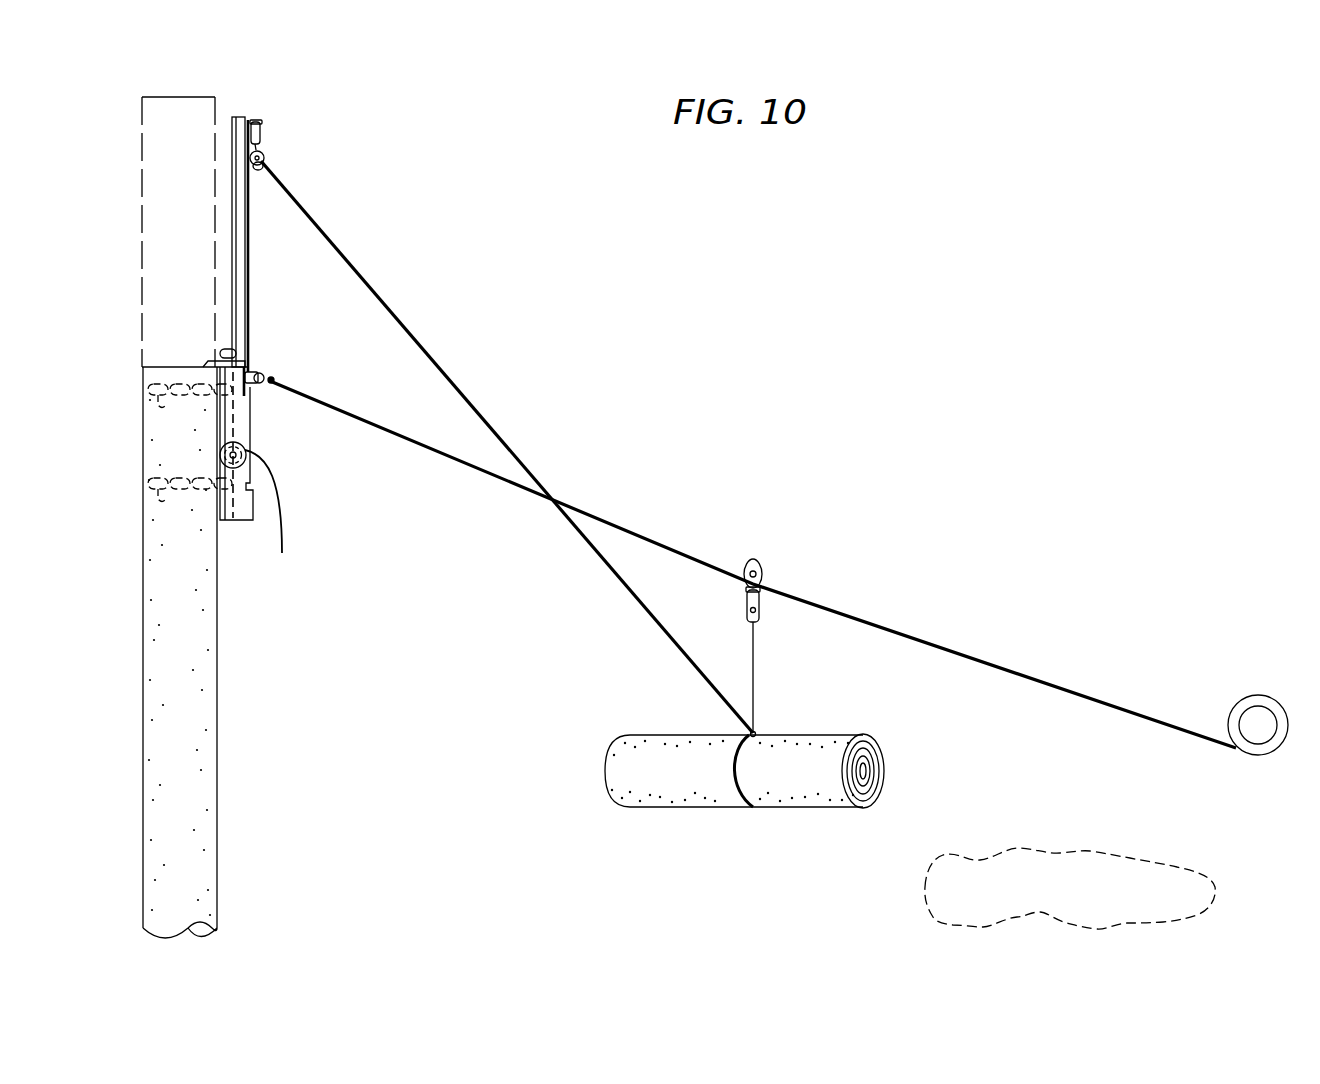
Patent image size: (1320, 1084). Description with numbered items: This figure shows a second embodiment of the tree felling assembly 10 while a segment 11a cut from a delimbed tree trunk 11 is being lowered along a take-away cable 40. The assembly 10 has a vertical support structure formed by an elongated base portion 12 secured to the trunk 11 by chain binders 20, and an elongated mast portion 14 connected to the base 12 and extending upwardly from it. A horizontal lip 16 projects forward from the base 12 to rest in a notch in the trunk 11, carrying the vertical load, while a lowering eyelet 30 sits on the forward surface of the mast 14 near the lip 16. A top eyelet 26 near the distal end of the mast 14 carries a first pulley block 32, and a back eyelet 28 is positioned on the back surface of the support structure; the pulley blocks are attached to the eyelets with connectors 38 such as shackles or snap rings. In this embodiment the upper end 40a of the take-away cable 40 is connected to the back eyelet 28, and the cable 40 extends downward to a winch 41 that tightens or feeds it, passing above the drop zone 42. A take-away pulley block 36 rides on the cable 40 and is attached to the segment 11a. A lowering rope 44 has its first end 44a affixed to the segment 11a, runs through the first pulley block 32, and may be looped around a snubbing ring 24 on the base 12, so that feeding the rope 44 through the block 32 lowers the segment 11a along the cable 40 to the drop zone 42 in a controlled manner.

The tree felling assembly 10 is at (306, 188).
The tree trunk 11 is at (141, 643).
The segment 11a is at (140, 153).
The base portion 12 is at (254, 417).
The mast portion 14 is at (238, 116).
The horizontal lip 16 is at (218, 362).
The chain binder 20 is at (146, 392).
The snubbing ring 24 is at (246, 456).
The top eyelet 26 is at (251, 120).
The back eyelet 28 is at (256, 372).
The lowering eyelet 30 is at (228, 348).
The first pulley block 32 is at (262, 170).
The take-away pulley block 36 is at (766, 571).
The connector 38 is at (264, 130).
The take-away cable 40 is at (965, 650).
The upper end of take-away cable 40a is at (278, 381).
The winch 41 is at (1258, 694).
The drop zone 42 is at (1082, 901).
The lowering rope 44 is at (440, 355).
The first end of lowering rope 44a is at (740, 790).